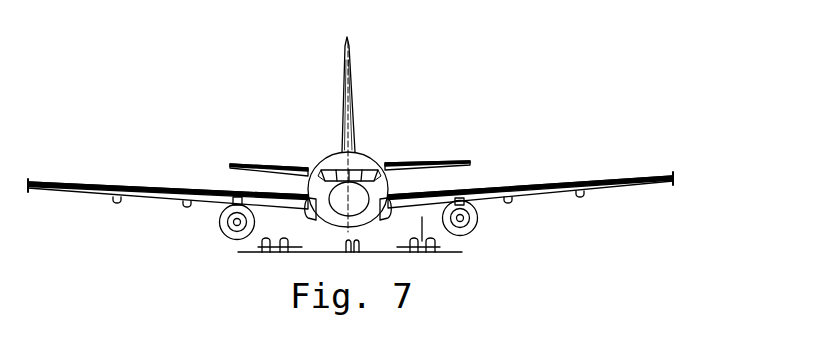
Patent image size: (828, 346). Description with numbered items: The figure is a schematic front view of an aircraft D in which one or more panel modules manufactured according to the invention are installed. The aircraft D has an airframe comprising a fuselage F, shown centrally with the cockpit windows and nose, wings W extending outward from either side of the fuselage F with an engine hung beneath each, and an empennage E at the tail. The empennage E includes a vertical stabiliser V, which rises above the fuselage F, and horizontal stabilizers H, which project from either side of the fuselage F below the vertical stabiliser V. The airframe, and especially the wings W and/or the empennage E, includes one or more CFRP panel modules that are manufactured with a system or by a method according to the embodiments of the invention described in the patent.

The aircraft D is at (95, 40).
The empennage E is at (410, 93).
The vertical stabiliser V is at (350, 80).
The fuselage F is at (327, 157).
The horizontal stabilizers H is at (243, 166).
The wings W is at (147, 197).